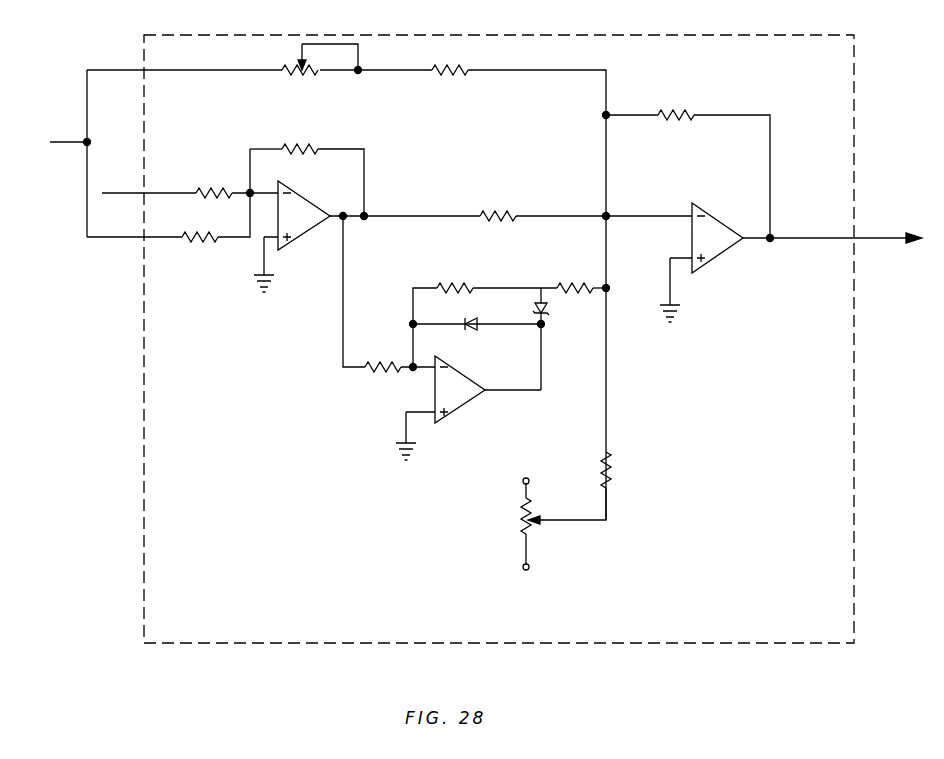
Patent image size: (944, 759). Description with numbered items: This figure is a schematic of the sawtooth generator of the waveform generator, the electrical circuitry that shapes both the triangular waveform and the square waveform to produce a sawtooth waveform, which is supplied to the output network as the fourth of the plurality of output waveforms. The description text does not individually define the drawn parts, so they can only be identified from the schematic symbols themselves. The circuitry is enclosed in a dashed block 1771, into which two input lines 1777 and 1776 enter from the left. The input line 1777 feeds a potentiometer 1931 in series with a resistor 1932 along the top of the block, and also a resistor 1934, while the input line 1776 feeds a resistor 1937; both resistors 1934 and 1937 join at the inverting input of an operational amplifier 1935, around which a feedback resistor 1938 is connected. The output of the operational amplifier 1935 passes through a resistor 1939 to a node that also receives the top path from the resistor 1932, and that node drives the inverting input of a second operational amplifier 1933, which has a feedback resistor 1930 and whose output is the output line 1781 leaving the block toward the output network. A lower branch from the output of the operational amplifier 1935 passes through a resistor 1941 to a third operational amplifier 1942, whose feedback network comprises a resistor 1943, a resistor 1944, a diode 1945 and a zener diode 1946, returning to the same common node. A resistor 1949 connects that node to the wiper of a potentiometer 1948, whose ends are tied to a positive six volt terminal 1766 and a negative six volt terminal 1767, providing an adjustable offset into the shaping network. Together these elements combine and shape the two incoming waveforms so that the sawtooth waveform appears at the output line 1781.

The circuit block (dashed enclosure) 1771 is at (856, 424).
The input line 1777 is at (80, 141).
The input line 1776 is at (122, 192).
The potentiometer 1931 is at (302, 73).
The resistor 1932 is at (449, 68).
The feedback resistor 1930 is at (678, 113).
The input resistor 1937 is at (214, 190).
The input resistor 1934 is at (198, 240).
The feedback resistor 1938 is at (288, 147).
The operational amplifier 1935 is at (325, 206).
The resistor 1939 is at (499, 213).
The operational amplifier 1933 is at (712, 210).
The output line 1781 is at (873, 242).
The resistor 1941 is at (390, 363).
The resistor 1943 is at (458, 285).
The resistor 1944 is at (576, 285).
The diode 1945 is at (473, 330).
The zener diode 1946 is at (549, 311).
The operational amplifier 1942 is at (474, 396).
The resistor 1949 is at (610, 470).
The potentiometer 1948 is at (522, 520).
The +6V supply terminal 1766 is at (521, 482).
The -6V supply terminal 1767 is at (522, 568).